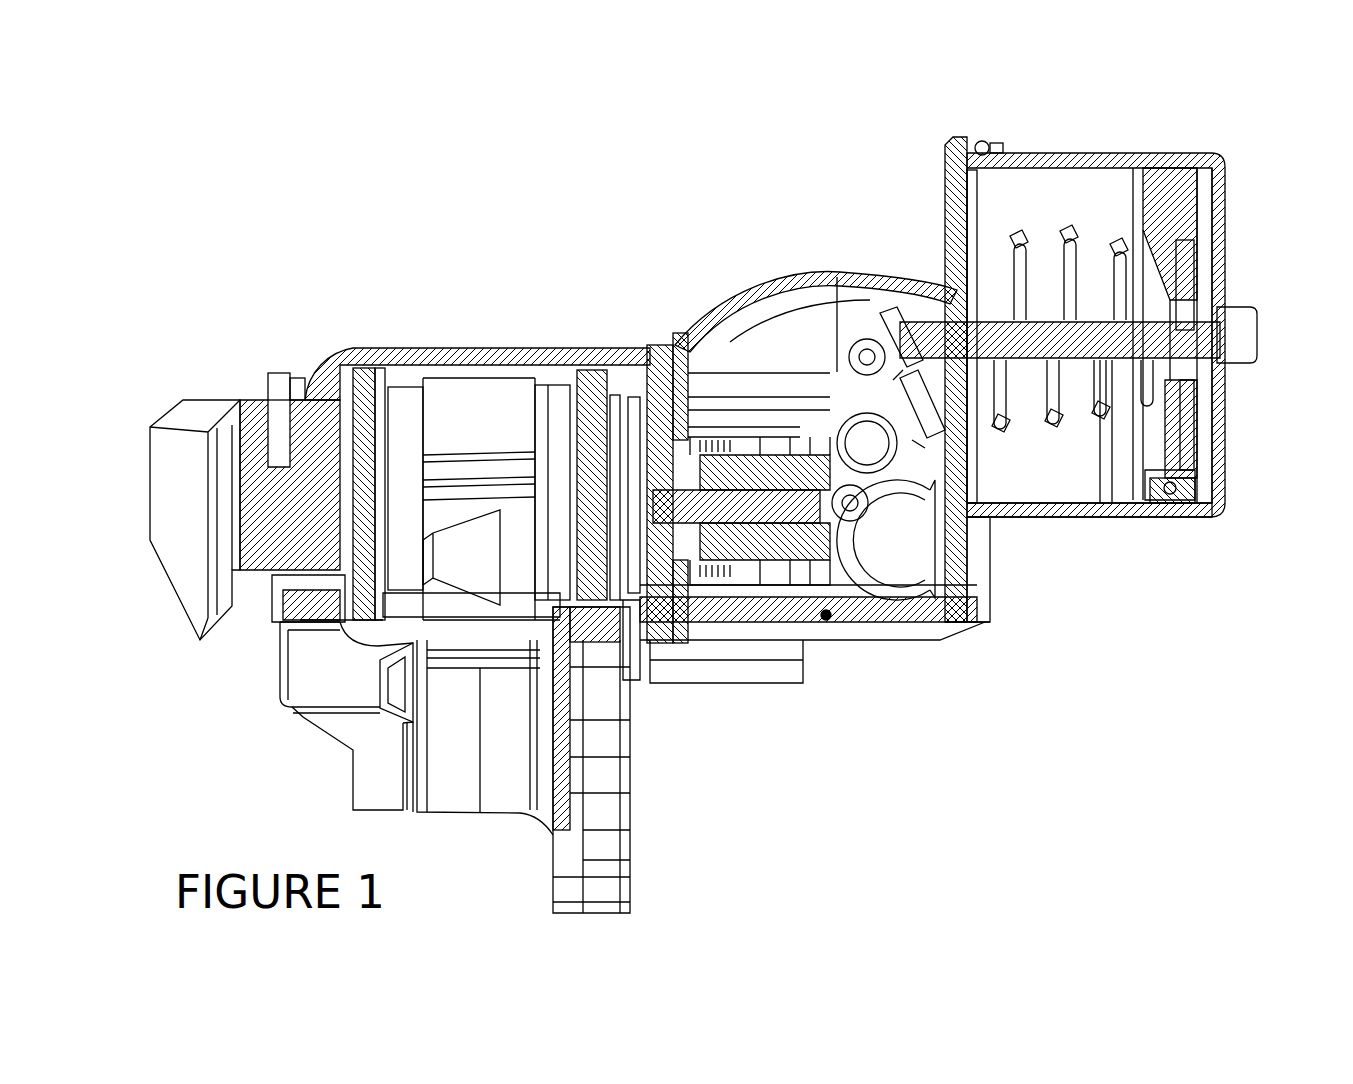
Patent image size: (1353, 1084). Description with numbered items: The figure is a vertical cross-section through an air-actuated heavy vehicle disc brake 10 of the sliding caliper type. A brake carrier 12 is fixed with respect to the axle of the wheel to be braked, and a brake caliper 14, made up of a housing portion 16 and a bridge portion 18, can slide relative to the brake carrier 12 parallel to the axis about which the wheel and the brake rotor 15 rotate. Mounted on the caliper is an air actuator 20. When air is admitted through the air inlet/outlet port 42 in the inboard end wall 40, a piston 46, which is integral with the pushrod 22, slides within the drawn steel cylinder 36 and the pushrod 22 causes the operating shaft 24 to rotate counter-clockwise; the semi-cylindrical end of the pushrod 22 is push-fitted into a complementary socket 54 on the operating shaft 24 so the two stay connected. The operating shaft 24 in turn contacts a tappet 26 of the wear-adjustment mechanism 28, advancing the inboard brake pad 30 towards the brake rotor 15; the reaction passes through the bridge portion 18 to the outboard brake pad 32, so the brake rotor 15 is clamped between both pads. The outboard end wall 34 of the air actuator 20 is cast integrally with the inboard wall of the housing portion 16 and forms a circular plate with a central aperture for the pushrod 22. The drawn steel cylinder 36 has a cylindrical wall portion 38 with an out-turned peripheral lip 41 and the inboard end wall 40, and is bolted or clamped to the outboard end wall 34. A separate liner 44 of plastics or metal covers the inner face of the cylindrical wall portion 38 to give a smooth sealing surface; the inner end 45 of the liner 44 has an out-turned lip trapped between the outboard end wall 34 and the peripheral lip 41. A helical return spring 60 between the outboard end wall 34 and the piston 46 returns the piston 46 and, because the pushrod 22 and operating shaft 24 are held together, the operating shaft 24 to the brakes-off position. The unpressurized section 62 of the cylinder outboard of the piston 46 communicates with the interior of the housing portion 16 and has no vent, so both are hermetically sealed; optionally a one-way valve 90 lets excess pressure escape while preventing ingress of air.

The heavy vehicle disc brake 10 is at (726, 490).
The brake carrier 12 is at (640, 890).
The brake caliper 14 is at (907, 630).
The brake rotor 15 is at (430, 763).
The housing portion 16 is at (952, 625).
The bridge portion 18 is at (193, 405).
The air actuator 20 is at (1079, 154).
The pushrod 22 is at (1110, 340).
The operating shaft 24 is at (885, 420).
The tappet 26 is at (809, 447).
The wear-adjustment mechanism 28 is at (740, 477).
The inboard brake pad 30 is at (600, 352).
The outboard brake pad 32 is at (370, 372).
The outboard end wall 34 is at (995, 465).
The drawn steel cylinder 36 is at (1213, 517).
The cylindrical wall portion 38 is at (1160, 517).
The inboard end wall 40 is at (1226, 222).
The out-turned peripheral lip 41 is at (991, 143).
The air inlet/outlet port 42 is at (1243, 373).
The liner 44 is at (1083, 517).
The inner end of liner 45 is at (974, 140).
The piston 46 is at (1197, 470).
The socket 54 is at (892, 340).
The helical return spring 60 is at (1072, 250).
The unpressurized section 62 is at (945, 330).
The one-way valve 90 is at (830, 620).